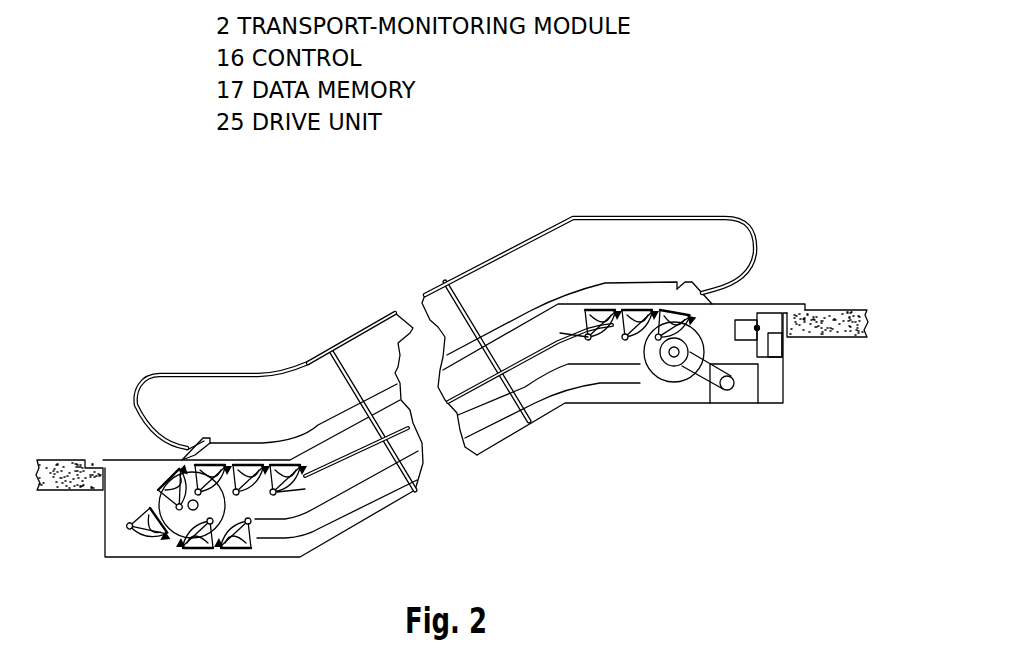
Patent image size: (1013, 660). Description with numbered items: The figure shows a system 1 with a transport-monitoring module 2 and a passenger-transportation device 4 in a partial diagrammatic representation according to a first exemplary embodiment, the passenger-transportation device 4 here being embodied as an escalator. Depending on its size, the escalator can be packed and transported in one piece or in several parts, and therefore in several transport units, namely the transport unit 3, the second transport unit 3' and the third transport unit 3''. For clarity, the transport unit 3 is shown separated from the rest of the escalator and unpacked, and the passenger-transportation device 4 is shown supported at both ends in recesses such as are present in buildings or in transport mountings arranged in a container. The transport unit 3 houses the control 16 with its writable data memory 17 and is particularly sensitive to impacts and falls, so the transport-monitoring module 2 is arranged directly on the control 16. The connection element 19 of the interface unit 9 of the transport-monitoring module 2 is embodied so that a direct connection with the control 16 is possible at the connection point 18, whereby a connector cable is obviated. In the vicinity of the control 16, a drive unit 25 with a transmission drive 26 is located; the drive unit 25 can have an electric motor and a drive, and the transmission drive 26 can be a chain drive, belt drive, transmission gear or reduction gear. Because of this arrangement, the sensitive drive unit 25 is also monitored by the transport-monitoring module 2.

The system 1 is at (455, 354).
The transport-monitoring module 2 is at (747, 320).
The transport unit 3 is at (590, 225).
The second transport unit 3' is at (351, 311).
The third transport unit 3'' is at (222, 375).
The passenger-transportation device 4 is at (330, 303).
The interface unit 9 is at (757, 328).
The control 16 is at (770, 315).
The data memory 17 is at (782, 348).
The connection point 18 is at (808, 365).
The connection element 19 is at (808, 365).
The drive unit 25 is at (745, 398).
The transmission drive 26 is at (688, 386).